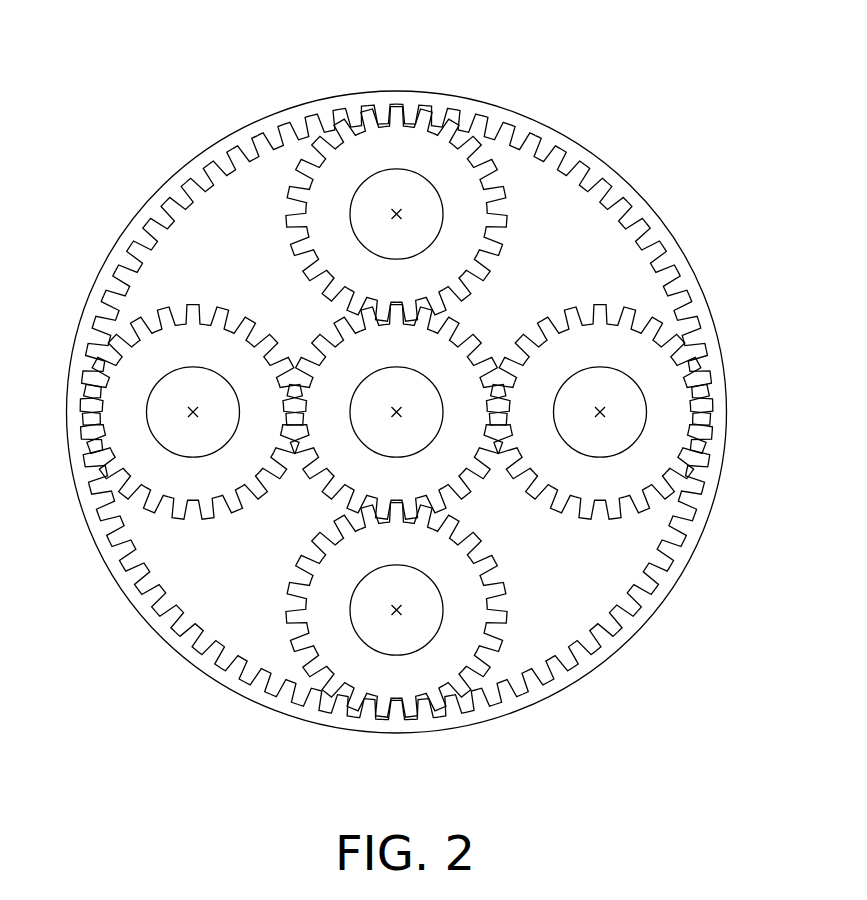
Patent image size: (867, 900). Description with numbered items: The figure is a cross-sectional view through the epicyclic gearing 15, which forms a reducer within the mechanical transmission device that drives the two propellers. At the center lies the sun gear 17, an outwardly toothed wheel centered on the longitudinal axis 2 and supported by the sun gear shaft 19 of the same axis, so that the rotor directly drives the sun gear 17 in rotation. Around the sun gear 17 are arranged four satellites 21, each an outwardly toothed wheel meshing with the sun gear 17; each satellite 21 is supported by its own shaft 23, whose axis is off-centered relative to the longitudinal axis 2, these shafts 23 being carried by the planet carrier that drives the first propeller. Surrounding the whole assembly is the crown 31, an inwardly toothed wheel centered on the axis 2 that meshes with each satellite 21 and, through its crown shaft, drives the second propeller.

The epicyclic gearing 15 is at (637, 107).
The crown 31 is at (467, 108).
The sun gear 17 is at (463, 380).
The sun gear shaft 19 is at (368, 435).
The longitudinal axis 2 is at (396, 407).
The satellite 21 is at (496, 224).
The satellite shaft 23 is at (352, 215).